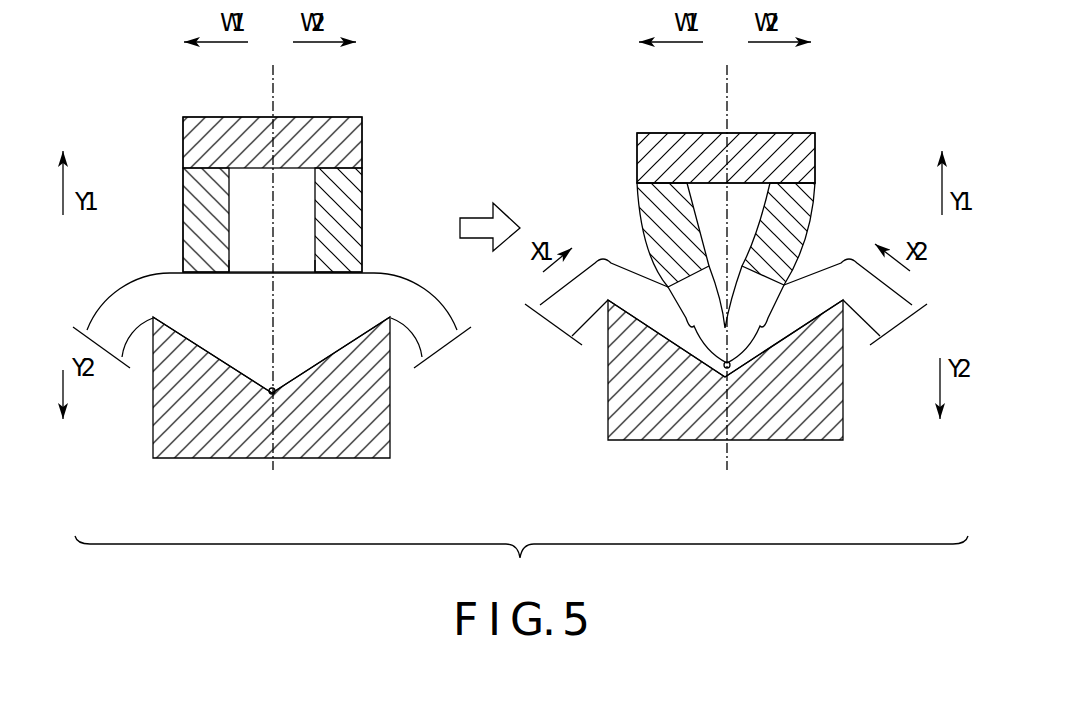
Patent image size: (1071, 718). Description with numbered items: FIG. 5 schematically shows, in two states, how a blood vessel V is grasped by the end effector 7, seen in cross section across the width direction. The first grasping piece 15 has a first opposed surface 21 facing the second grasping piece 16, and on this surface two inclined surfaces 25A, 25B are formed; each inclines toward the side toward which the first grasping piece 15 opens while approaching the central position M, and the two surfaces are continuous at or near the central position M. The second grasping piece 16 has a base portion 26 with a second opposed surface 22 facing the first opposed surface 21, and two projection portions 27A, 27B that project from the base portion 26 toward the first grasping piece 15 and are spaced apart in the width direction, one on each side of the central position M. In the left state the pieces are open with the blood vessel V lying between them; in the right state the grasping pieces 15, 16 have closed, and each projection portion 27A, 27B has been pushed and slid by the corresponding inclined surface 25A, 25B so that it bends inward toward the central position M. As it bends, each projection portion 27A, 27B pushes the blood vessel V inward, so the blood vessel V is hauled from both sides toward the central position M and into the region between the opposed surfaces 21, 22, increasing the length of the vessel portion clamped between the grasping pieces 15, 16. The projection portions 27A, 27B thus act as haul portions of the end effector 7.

The end effector 7 is at (376, 88).
The first grasping piece 15 is at (402, 424).
The second grasping piece 16 is at (375, 158).
The first opposed surface 21 is at (262, 366).
The second opposed surface 22 is at (250, 282).
The inclined surface 25A is at (260, 360).
The inclined surface 25B is at (327, 360).
The base portion 26 is at (228, 132).
The projection portion 27A is at (195, 181).
The projection portion 27B is at (362, 176).
The blood vessel V is at (150, 270).
The central position M is at (273, 88).